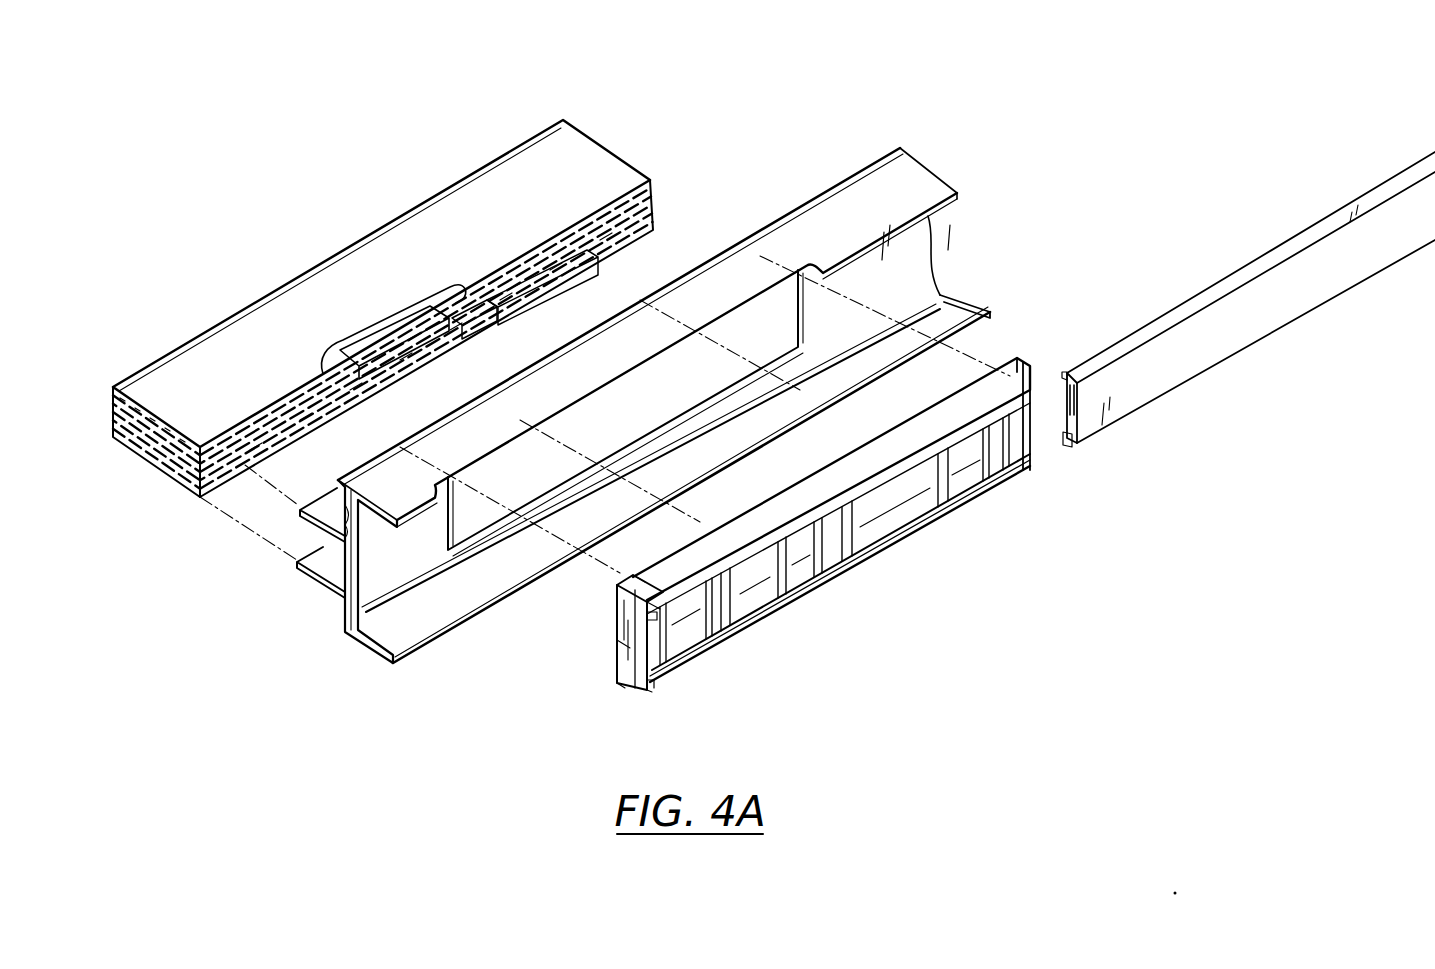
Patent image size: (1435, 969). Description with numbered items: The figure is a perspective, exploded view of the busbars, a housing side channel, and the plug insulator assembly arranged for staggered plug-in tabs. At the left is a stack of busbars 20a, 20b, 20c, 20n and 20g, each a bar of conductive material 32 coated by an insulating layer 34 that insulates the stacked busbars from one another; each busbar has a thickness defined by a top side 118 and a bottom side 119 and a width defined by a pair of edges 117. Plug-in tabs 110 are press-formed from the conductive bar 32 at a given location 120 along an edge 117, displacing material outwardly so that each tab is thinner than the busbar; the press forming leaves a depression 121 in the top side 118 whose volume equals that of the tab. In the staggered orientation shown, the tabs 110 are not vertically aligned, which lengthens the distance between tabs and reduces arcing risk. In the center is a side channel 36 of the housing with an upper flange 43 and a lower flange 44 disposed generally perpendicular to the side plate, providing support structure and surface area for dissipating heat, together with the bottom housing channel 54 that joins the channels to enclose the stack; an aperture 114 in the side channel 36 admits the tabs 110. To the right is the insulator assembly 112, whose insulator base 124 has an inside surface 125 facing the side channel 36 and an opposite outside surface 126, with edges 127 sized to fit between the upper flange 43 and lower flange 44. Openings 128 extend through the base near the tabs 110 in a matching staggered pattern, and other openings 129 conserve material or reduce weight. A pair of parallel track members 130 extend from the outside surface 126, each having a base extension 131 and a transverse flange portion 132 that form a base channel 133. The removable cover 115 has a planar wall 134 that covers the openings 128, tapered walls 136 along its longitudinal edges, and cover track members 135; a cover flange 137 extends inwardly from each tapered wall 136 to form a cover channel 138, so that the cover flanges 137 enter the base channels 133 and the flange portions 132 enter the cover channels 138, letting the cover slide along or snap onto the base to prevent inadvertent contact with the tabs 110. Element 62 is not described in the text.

The top side 118 is at (420, 334).
The insulating layer 34 is at (183, 433).
The busbar 20g is at (593, 172).
The busbar 20a is at (653, 193).
The busbar 20b is at (657, 201).
The busbar 20c is at (657, 211).
The busbar 20n is at (657, 220).
The edges 117 is at (105, 437).
The bar of conductive material 32 is at (147, 466).
The bottom side 119 is at (187, 483).
The plug-in tab location 120 is at (371, 338).
The depression 121 is at (413, 300).
The plug-in tab 110 is at (567, 275).
The side channel 36 is at (635, 428).
The upper flange 43 is at (848, 212).
The aperture 114 is at (790, 326).
The upper flange 62 is at (320, 507).
The bottom housing channel 54 is at (323, 577).
The lower flange 44 is at (390, 660).
The insulator assembly 112 is at (797, 529).
The insulator base 124 is at (633, 690).
The inside surface 125 is at (617, 658).
The outside surface 126 is at (647, 690).
The edges 127 is at (630, 585).
The base extension 131 is at (652, 627).
The flange portion 132 is at (652, 612).
The base channel 133 is at (883, 473).
The track member 130 is at (770, 547).
The openings 129 is at (683, 630).
The openings 128 is at (820, 580).
The cover flange 137 is at (1037, 380).
The planar wall 134 is at (1241, 324).
The tapered walls 136 is at (1352, 215).
The cover 115 is at (1110, 397).
The cover channel 138 is at (1100, 432).
The cover track member 135 is at (1070, 372).